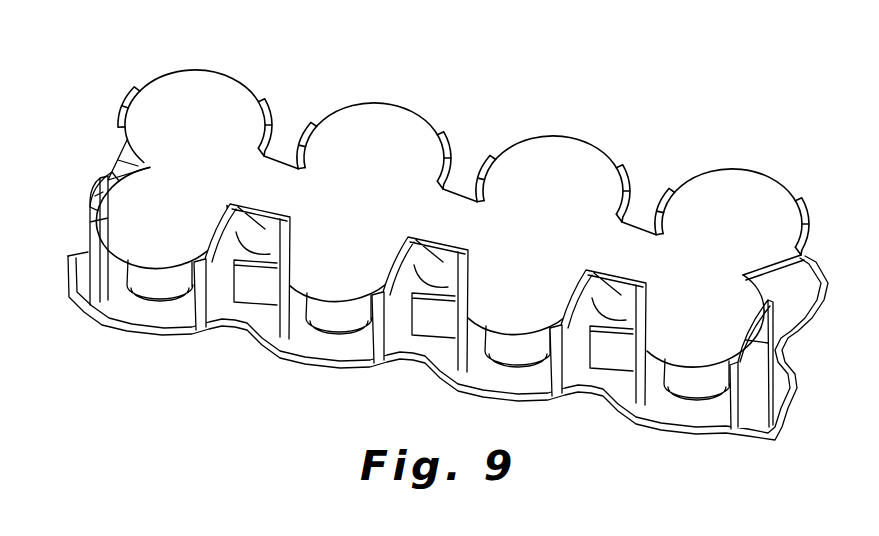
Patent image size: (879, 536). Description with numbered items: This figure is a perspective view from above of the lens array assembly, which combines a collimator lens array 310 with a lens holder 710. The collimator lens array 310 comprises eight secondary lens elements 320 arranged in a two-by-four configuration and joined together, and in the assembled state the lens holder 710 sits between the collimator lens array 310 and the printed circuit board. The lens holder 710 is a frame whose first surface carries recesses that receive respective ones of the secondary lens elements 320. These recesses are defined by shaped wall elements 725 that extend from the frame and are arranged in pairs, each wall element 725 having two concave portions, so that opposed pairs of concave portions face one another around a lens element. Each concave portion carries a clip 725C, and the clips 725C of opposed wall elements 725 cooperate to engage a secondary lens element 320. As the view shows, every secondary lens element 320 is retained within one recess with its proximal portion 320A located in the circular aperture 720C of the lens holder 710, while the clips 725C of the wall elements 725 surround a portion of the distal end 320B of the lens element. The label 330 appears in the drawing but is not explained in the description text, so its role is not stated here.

The collimator lens array 310 is at (106, 136).
The secondary lens element 320 is at (560, 185).
The proximal portion 320A is at (692, 408).
The distal end 320B is at (720, 220).
The web between pockets 330 is at (447, 217).
The lens holder 710 is at (768, 408).
The circular aperture 720C is at (320, 333).
The wall element 725 is at (197, 324).
The clip 725C is at (435, 130).